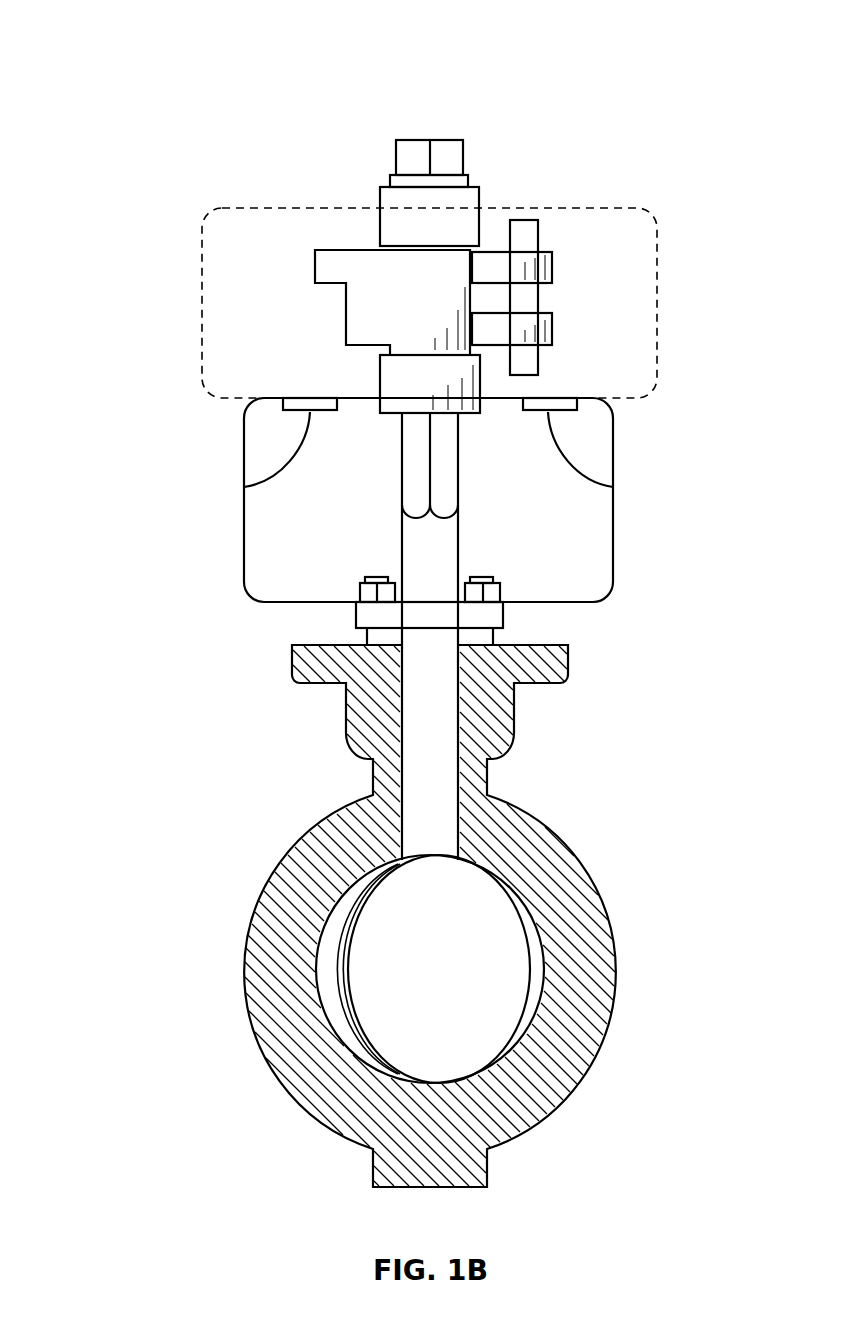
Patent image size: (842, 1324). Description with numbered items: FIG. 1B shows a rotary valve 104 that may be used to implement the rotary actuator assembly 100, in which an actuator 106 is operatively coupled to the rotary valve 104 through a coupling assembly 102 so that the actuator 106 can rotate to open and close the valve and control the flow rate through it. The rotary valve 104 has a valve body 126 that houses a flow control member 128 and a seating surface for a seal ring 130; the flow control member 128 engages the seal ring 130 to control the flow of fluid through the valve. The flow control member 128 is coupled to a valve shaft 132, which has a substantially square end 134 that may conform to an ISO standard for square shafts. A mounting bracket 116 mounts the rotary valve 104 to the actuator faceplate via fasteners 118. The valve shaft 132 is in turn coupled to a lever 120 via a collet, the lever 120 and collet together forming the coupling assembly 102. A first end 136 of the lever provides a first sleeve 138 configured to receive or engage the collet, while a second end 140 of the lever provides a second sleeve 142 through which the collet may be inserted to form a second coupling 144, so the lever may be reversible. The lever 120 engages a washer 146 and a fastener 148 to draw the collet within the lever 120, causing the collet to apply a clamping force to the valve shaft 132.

The rotary actuator assembly 100 is at (138, 36).
The coupling assembly 102 is at (362, 362).
The rotary valve 104 is at (597, 884).
The actuator 106 is at (666, 300).
The mounting bracket 116 is at (244, 445).
The fasteners 118 is at (244, 488).
The lever 120 is at (343, 250).
The valve body 126 is at (258, 958).
The flow control member 128 is at (453, 982).
The seal ring 130 is at (397, 1078).
The valve shaft 132 is at (412, 552).
The square end 134 is at (458, 488).
The first end 136 is at (480, 392).
The first sleeve 138 is at (380, 383).
The second end 140 is at (433, 250).
The second sleeve 142 is at (479, 217).
The second coupling 144 is at (488, 186).
The washer 146 is at (390, 180).
The fastener 148 is at (463, 152).